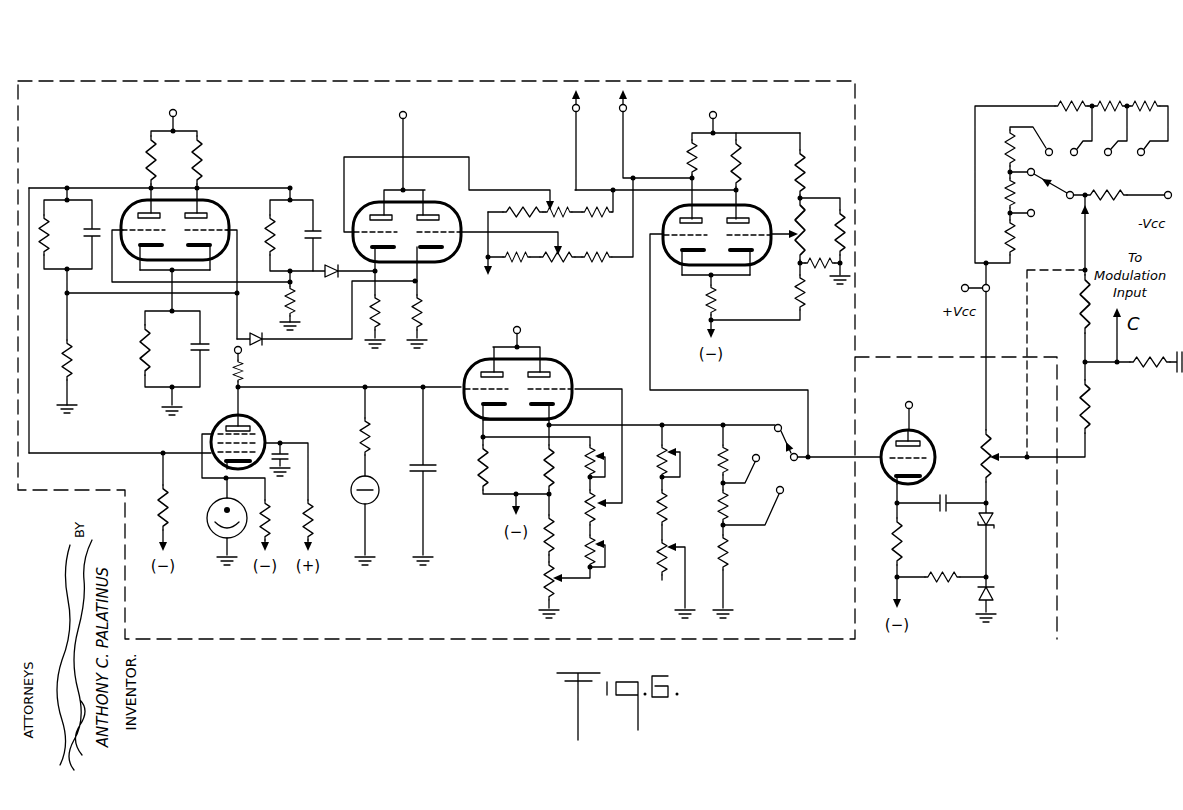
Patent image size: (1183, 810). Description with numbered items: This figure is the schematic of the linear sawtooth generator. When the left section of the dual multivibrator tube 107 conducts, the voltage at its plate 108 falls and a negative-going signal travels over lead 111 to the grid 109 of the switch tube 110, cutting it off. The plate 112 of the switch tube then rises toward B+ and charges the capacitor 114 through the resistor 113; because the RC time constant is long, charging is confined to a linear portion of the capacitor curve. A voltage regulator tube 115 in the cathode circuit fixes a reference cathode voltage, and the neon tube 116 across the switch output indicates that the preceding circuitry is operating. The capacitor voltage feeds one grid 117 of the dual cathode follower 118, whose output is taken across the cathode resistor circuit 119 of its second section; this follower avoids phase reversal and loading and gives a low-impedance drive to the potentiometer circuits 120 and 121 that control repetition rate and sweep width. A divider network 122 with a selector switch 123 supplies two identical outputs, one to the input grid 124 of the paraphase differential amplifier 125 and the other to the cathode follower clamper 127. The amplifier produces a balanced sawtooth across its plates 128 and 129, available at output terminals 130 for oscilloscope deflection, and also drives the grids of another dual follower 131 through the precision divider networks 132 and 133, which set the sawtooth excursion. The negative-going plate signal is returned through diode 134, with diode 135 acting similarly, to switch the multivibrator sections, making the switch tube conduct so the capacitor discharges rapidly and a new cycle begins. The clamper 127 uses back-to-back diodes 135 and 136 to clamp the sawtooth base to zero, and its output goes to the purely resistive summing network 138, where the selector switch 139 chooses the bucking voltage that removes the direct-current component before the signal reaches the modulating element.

The dual multivibrator tube 107 is at (186, 194).
The plate 108 is at (150, 185).
The grid 109 is at (187, 457).
The switch tube 110 is at (263, 431).
The lead 111 is at (28, 330).
The plate 112 is at (237, 404).
The resistor 113 is at (242, 366).
The capacitor 114 is at (446, 462).
The voltage regulator tube 115 is at (207, 512).
The neon tube 116 is at (382, 498).
The grid 117 is at (455, 387).
The dual cathode follower 118 is at (485, 359).
The cathode resistor circuit 119 is at (569, 447).
The potentiometer circuit 120 is at (556, 503).
The potentiometer circuit 121 is at (677, 521).
The divider network 122 is at (748, 521).
The selector switch 123 is at (770, 441).
The input grid 124 is at (649, 297).
The paraphase differential amplifier 125 is at (727, 162).
The cathode follower clamper 127 is at (921, 436).
The plate 128 is at (867, 456).
The plate 129 is at (717, 230).
The output terminals 130 is at (616, 139).
The dual follower 131 is at (436, 184).
The divider network 132 is at (552, 216).
The divider network 133 is at (548, 266).
The diode 134 is at (327, 312).
The diode 135 is at (977, 517).
The diode 136 is at (976, 589).
The summing network 138 is at (958, 222).
The selector switch 139 is at (1066, 229).